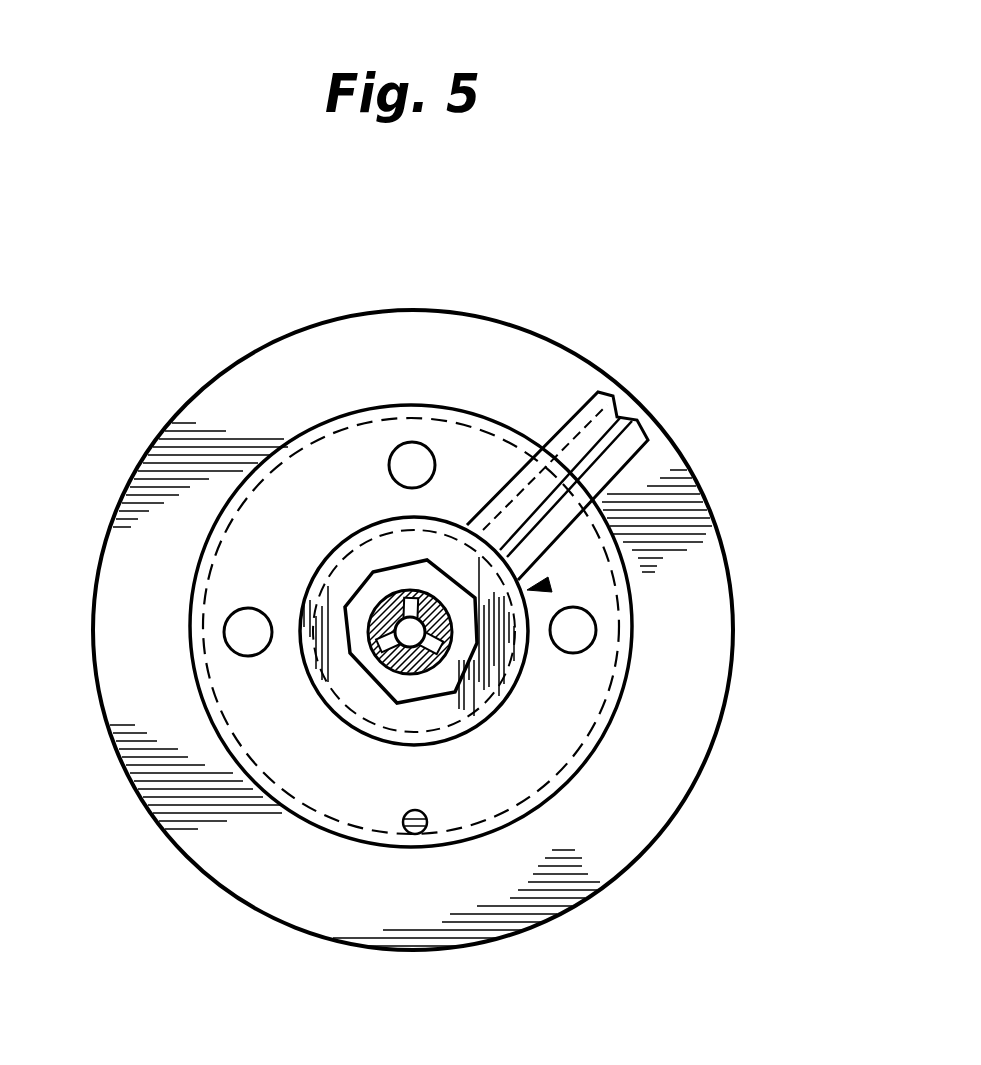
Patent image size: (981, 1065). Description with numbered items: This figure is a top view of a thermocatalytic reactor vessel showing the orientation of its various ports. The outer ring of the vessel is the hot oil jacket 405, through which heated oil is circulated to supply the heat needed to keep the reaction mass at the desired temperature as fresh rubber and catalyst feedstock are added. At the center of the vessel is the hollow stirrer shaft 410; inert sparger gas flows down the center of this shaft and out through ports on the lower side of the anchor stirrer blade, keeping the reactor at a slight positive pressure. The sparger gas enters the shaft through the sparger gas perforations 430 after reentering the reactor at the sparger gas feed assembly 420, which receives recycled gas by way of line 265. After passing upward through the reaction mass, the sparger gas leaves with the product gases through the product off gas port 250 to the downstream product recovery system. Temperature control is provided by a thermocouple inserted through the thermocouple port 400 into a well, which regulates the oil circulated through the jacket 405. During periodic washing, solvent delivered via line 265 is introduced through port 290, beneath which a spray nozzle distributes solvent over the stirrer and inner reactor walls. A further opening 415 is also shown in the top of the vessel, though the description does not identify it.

The hot oil jacket 405 is at (482, 348).
The port 290 is at (410, 453).
The hollow stirrer shaft 410 is at (372, 607).
The line 265 is at (621, 417).
The sparger gas feed assembly 420 is at (545, 586).
The product off gas port 250 is at (587, 635).
The mounting hole 415 is at (237, 640).
The sparger gas perforations 430 is at (447, 653).
The thermocouple port 400 is at (423, 830).